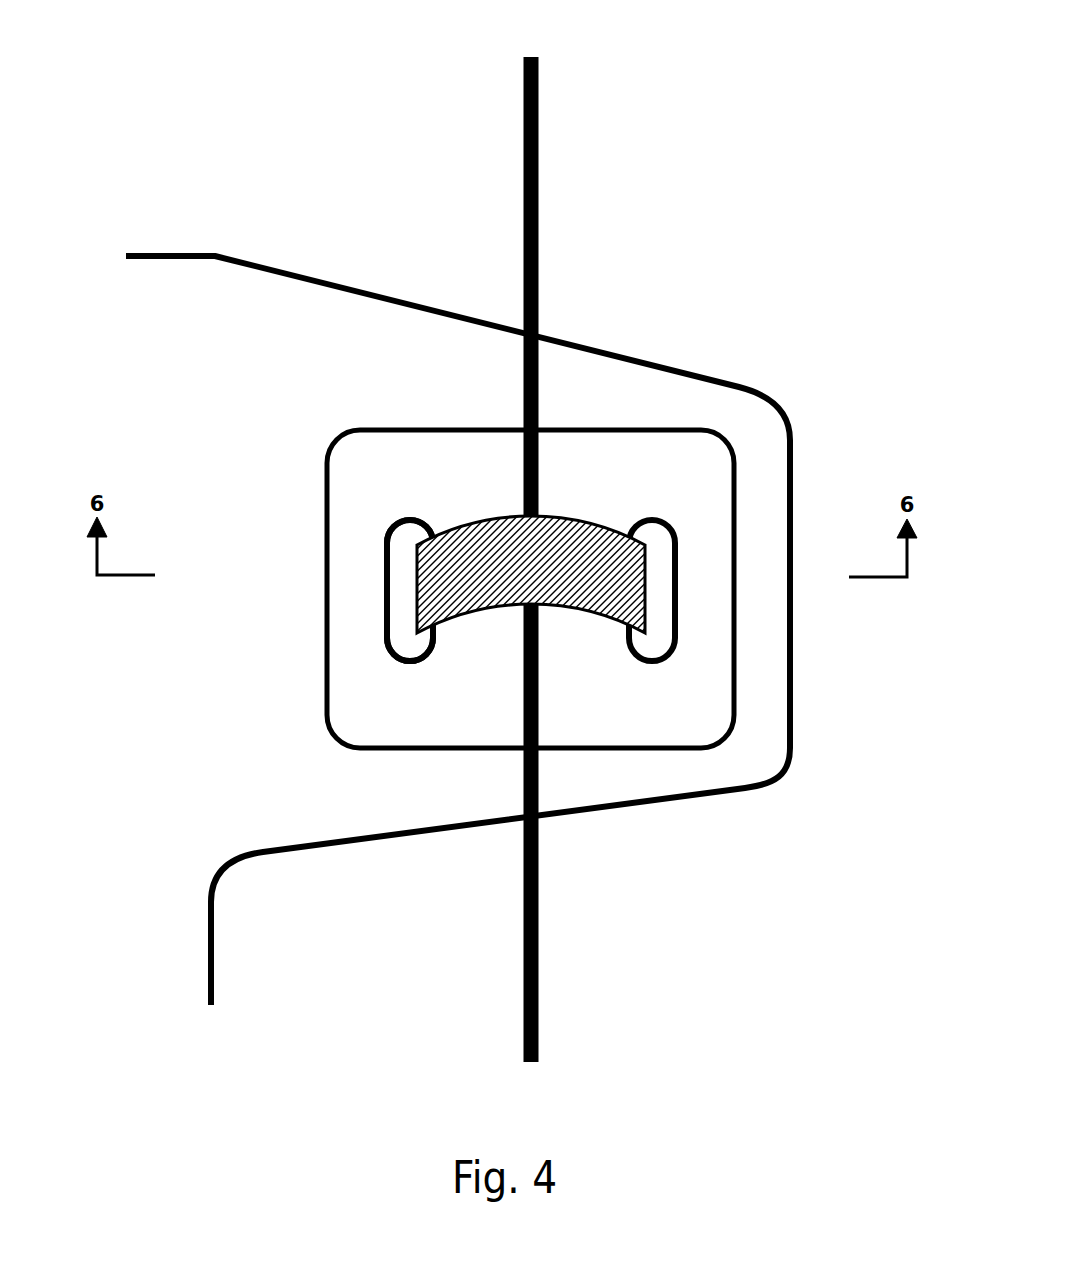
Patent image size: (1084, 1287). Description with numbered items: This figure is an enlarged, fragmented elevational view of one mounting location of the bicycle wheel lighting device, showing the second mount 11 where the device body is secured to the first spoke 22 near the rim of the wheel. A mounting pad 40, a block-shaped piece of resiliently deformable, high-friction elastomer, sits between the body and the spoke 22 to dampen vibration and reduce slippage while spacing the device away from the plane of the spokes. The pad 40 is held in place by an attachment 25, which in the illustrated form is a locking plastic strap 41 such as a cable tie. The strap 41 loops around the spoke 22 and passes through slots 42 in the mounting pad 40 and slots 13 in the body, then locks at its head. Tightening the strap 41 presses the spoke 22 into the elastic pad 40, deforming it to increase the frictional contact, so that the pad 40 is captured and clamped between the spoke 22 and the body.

The second mount 11 is at (472, 371).
The first spoke 22 is at (536, 225).
The mounting pad 40 is at (325, 630).
The slots 13 is at (383, 542).
The slots 42 is at (383, 576).
The locking plastic strap 41 is at (587, 518).
The attachment 25 is at (603, 621).